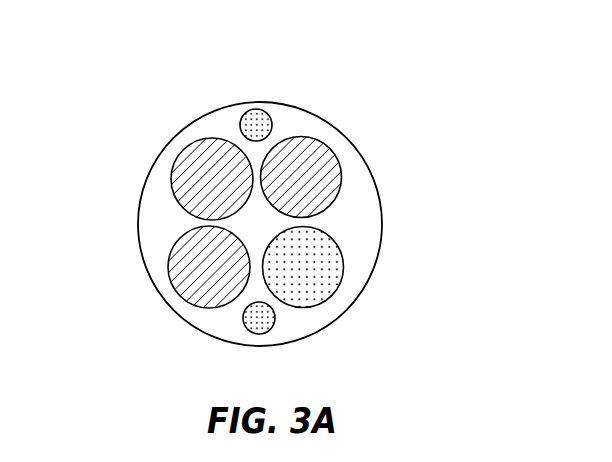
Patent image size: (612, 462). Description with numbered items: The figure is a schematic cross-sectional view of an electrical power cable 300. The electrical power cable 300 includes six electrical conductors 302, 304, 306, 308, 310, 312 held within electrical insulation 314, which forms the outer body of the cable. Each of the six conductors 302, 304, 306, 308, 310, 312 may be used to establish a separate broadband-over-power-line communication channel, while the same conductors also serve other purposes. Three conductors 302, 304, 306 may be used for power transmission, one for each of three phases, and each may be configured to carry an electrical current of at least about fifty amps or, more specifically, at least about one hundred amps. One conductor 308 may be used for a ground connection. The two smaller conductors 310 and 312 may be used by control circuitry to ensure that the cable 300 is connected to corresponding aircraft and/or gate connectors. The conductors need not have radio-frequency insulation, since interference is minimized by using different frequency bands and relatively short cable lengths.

The electrical power cable 300 is at (396, 78).
The electrical conductor 302 is at (183, 187).
The electrical conductor 304 is at (183, 275).
The electrical conductor 306 is at (325, 168).
The electrical conductor 308 is at (313, 258).
The electrical conductor 310 is at (256, 316).
The electrical conductor 312 is at (255, 123).
The electrical insulation 314 is at (352, 211).